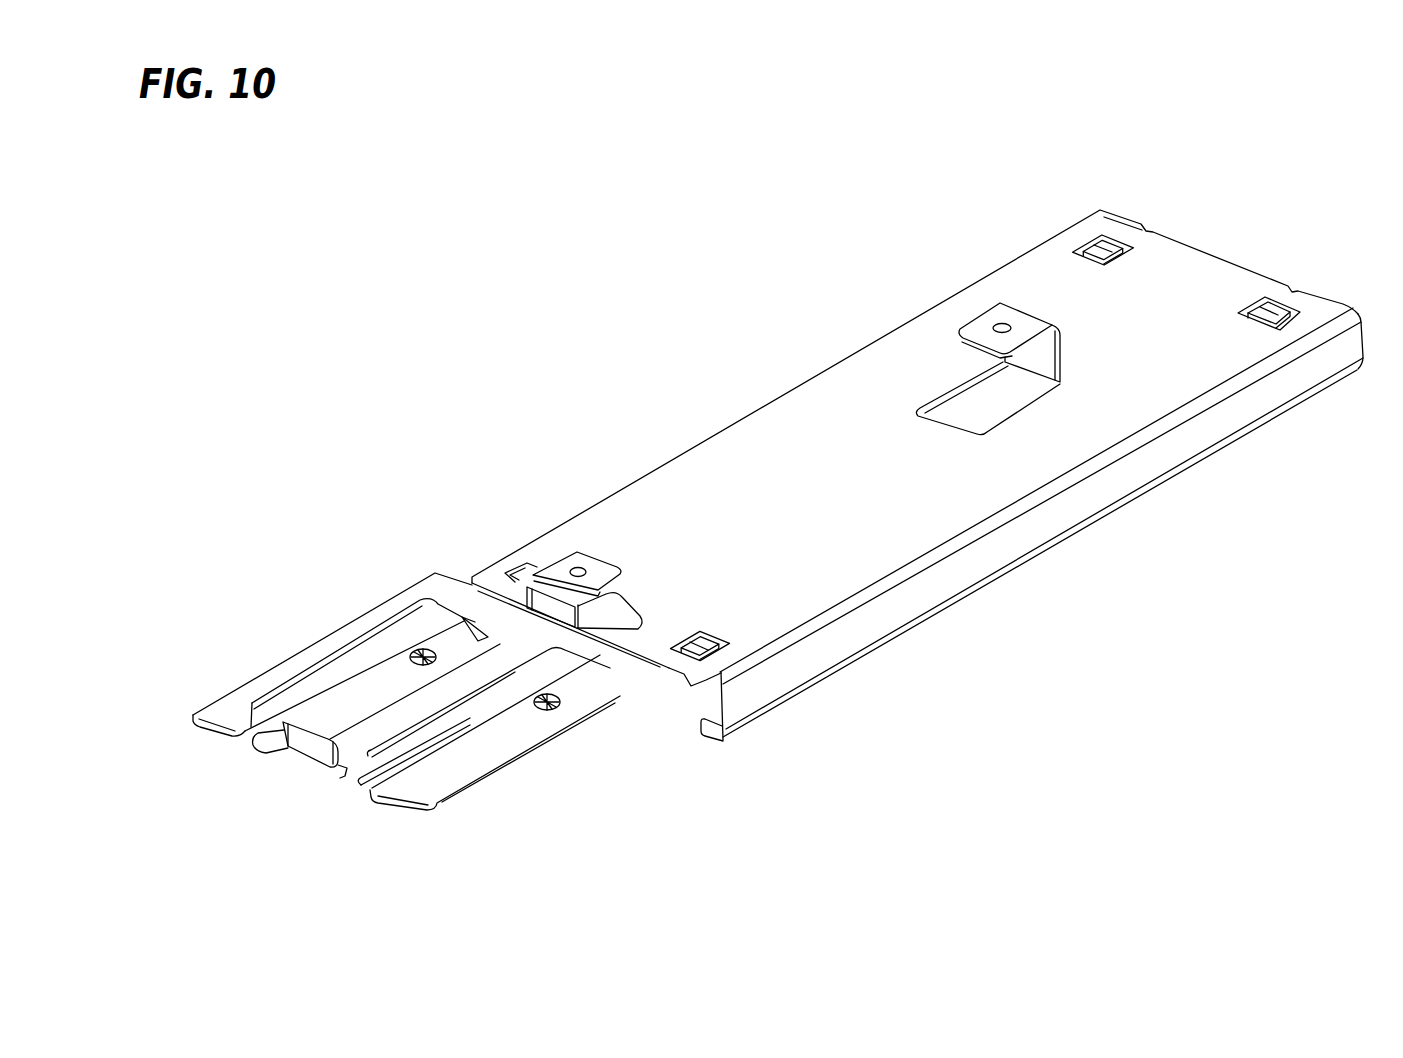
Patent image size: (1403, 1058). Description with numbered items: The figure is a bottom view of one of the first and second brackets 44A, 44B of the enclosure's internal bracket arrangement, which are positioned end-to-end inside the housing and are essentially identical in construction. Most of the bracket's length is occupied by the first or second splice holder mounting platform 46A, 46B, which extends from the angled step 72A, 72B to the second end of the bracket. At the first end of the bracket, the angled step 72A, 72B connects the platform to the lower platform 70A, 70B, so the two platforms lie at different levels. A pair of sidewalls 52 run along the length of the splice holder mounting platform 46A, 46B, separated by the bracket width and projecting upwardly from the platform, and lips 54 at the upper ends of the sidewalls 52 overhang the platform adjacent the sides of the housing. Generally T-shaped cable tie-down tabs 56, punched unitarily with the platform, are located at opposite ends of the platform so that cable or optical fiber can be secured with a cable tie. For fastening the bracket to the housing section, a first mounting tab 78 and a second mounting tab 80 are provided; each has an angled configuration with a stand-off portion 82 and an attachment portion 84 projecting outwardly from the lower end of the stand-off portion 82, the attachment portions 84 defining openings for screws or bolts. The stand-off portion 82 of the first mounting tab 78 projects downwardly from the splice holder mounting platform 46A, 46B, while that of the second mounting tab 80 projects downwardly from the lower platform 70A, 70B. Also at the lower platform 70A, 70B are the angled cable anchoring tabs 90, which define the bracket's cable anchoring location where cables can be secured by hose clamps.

The first bracket 44A is at (693, 285).
The second bracket 44B is at (775, 516).
The first splice holder mounting platform 46A is at (798, 433).
The second splice holder mounting platform 46B is at (917, 483).
The sidewalls 52 is at (847, 651).
The lips 54 is at (706, 746).
The cable tie-down tabs 56 is at (1113, 243).
The first lower platform 70A is at (323, 632).
The second lower platform 70B is at (404, 706).
The first angled step 72A is at (662, 675).
The second angled step 72B is at (685, 762).
The first mounting tab 78 is at (1058, 330).
The second mounting tab 80 is at (566, 556).
The stand-off portions 82 is at (1058, 353).
The attachment portions 84 is at (978, 323).
The cable anchoring tabs 90 is at (205, 726).